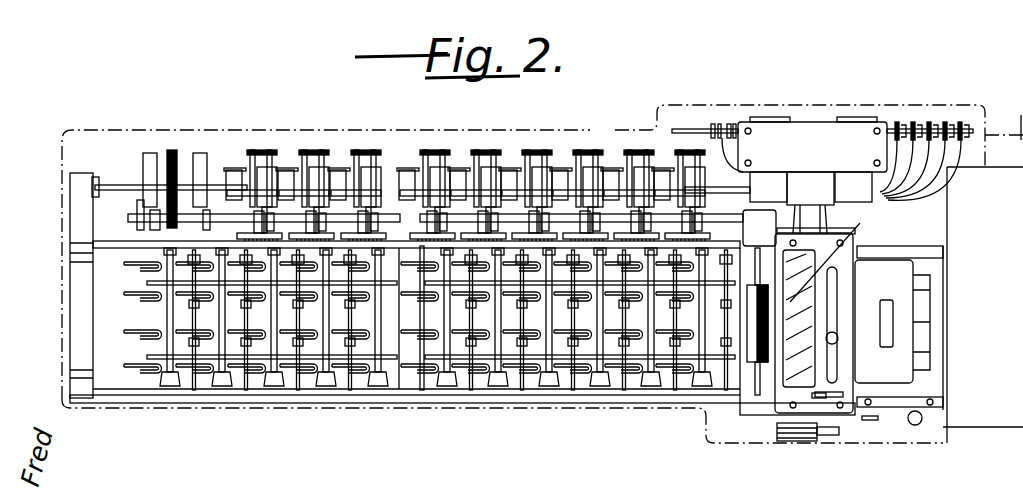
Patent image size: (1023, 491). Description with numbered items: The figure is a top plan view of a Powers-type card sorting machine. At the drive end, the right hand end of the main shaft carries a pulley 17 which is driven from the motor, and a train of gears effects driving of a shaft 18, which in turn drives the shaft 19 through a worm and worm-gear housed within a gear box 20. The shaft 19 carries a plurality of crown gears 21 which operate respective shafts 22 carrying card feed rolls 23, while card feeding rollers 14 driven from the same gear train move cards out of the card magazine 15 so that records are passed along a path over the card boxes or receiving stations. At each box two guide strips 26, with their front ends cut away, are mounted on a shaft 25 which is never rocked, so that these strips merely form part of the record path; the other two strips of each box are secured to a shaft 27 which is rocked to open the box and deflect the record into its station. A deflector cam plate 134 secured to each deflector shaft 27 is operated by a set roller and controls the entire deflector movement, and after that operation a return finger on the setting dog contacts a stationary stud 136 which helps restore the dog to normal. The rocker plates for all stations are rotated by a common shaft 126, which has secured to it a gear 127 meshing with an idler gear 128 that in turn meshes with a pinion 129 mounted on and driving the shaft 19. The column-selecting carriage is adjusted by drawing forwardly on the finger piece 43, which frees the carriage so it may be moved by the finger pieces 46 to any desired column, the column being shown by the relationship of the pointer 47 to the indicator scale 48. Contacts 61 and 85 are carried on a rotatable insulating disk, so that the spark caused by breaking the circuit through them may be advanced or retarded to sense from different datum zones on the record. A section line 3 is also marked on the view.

The section line 3 is at (603, 140).
The card feeding rollers 14 is at (756, 320).
The card magazine 15 is at (920, 268).
The pulley 17 is at (856, 233).
The shaft 18 is at (757, 384).
The shaft 19 is at (720, 218).
The gear box 20 is at (759, 228).
The crown gears 21 is at (205, 210).
The shafts 22 is at (168, 315).
The card feed rolls 23 is at (122, 285).
The shaft 25 is at (548, 313).
The guide strips 26 is at (296, 410).
The shaft 27 is at (637, 317).
The finger piece 43 is at (820, 398).
The finger pieces 46 is at (838, 340).
The pointer 47 is at (806, 340).
The indicator scale 48 is at (850, 226).
The contact 61 is at (789, 428).
The contact 85 is at (795, 436).
The common shaft 126 is at (120, 183).
The gear 127 is at (178, 177).
The idler gear 128 is at (168, 157).
The pinion 129 is at (137, 218).
The deflector cam plate 134 is at (348, 167).
The stationary stud 136 is at (478, 157).